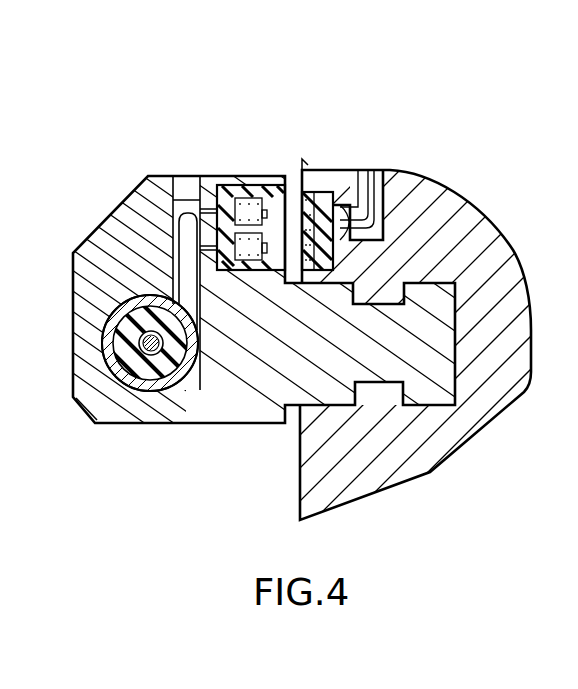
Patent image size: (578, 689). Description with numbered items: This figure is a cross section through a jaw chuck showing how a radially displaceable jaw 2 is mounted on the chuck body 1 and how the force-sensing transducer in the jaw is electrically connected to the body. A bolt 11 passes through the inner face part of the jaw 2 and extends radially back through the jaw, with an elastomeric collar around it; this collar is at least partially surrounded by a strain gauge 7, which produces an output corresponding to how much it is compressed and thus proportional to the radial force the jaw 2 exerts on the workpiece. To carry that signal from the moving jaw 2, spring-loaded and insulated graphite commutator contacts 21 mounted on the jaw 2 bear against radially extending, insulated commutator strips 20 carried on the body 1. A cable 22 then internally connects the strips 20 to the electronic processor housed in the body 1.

The chuck body 1 is at (427, 458).
The jaw 2 is at (242, 397).
The strain gauge 7 is at (185, 378).
The bolt 11 is at (140, 386).
The commutator strip 20 is at (330, 192).
The commutator contact 21 is at (277, 240).
The cable 22 is at (374, 170).